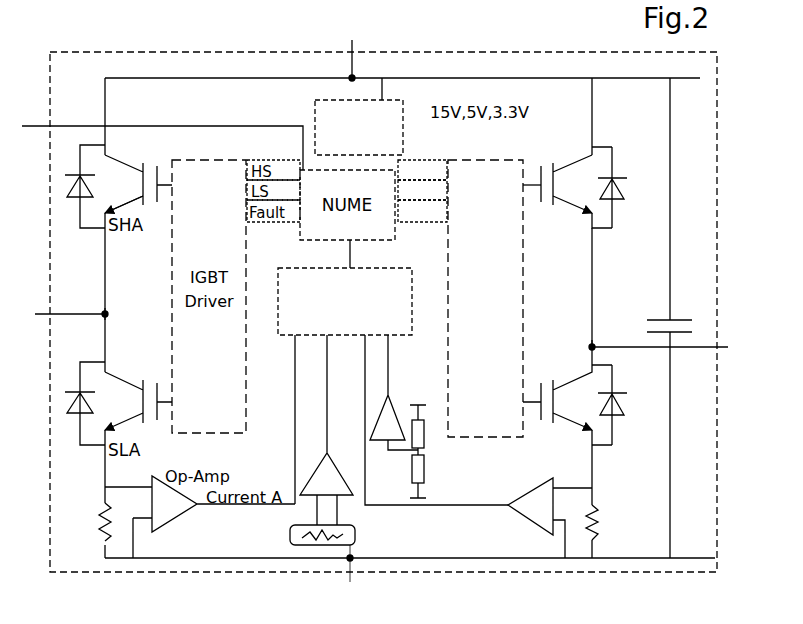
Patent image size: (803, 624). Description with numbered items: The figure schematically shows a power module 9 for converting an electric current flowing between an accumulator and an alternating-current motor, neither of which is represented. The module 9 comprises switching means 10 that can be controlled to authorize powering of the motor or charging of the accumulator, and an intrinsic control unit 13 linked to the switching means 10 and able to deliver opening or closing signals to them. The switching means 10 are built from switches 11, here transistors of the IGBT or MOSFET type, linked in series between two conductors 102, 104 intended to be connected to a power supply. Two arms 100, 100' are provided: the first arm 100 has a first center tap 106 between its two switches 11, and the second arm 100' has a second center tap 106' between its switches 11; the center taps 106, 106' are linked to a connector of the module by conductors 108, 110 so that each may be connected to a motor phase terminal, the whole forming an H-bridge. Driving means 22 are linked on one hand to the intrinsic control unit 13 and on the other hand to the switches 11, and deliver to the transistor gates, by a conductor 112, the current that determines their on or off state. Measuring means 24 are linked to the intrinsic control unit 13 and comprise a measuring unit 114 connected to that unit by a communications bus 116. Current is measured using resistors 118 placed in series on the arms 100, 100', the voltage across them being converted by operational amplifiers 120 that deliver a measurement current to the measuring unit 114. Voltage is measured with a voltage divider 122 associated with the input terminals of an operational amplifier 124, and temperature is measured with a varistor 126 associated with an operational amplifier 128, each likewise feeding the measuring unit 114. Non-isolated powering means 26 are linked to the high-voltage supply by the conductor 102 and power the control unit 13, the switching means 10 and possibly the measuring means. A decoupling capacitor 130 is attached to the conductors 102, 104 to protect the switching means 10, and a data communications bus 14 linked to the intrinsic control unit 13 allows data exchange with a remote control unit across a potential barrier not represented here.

The power module 9 is at (48, 462).
The switching means 10 is at (537, 147).
The switches 11 is at (620, 163).
The intrinsic control unit 13 is at (397, 232).
The data communications bus 14 is at (90, 126).
The driving means 22 is at (505, 160).
The measuring means 24 is at (418, 522).
The powering means 26 is at (403, 108).
The first arm 100 is at (563, 287).
The second arm 100' is at (136, 343).
The conductor 102 is at (203, 78).
The conductor 104 is at (192, 560).
The first center tap 106 is at (621, 364).
The second center tap 106' is at (132, 281).
The conductor 108 is at (708, 352).
The conductor 110 is at (90, 313).
The conductor 112 is at (532, 187).
The measuring unit 114 is at (313, 336).
The communications bus 116 is at (350, 262).
The resistors 118 is at (607, 533).
The operational amplifiers 120 is at (543, 478).
The voltage divider 122 is at (428, 473).
The operational amplifier 124 is at (392, 400).
The varistor 126 is at (285, 520).
The operational amplifier 128 is at (348, 472).
The decoupling capacitor 130 is at (680, 315).